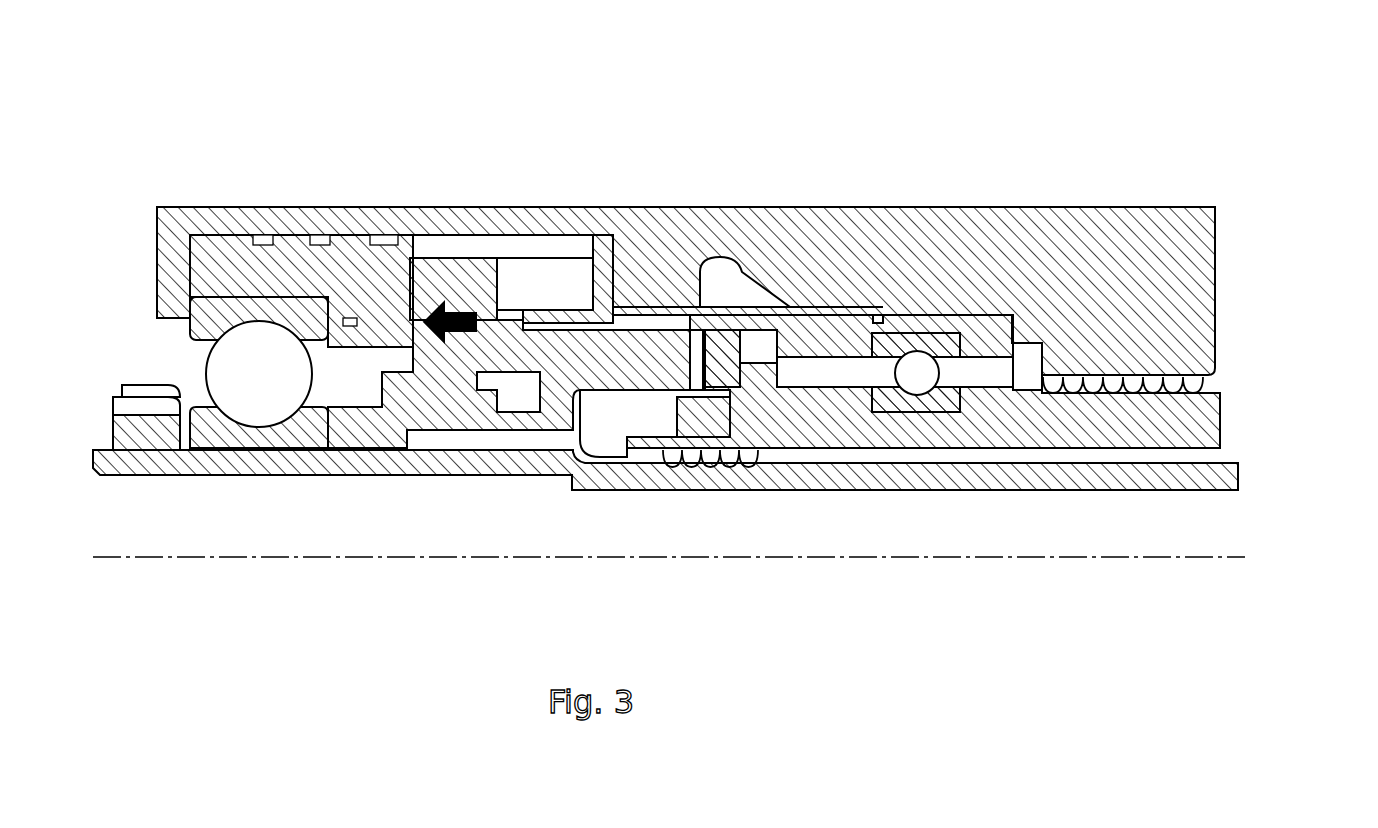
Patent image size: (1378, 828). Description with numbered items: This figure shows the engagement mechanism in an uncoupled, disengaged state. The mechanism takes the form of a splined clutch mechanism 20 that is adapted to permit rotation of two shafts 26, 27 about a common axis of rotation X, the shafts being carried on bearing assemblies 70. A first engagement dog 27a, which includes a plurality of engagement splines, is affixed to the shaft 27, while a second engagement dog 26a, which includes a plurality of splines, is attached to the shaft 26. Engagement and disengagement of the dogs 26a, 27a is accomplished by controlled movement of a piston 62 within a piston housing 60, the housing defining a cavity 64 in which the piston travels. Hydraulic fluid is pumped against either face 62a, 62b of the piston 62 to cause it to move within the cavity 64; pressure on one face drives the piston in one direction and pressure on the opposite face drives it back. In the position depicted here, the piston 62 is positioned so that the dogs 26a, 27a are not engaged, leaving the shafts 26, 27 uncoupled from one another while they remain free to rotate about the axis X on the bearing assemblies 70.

The piston housing 60 is at (305, 265).
The piston 62 is at (463, 287).
The piston face 62a is at (403, 274).
The piston face 62b is at (501, 290).
The cavity 64 is at (558, 276).
The second engagement dog 26a is at (628, 351).
The splined clutch mechanism 20 is at (714, 355).
The first engagement dog 27a is at (768, 355).
The shaft 27 is at (1222, 417).
The shaft 26 is at (184, 480).
The bearing assemblies 70 is at (920, 405).
The axis of rotation X is at (801, 565).